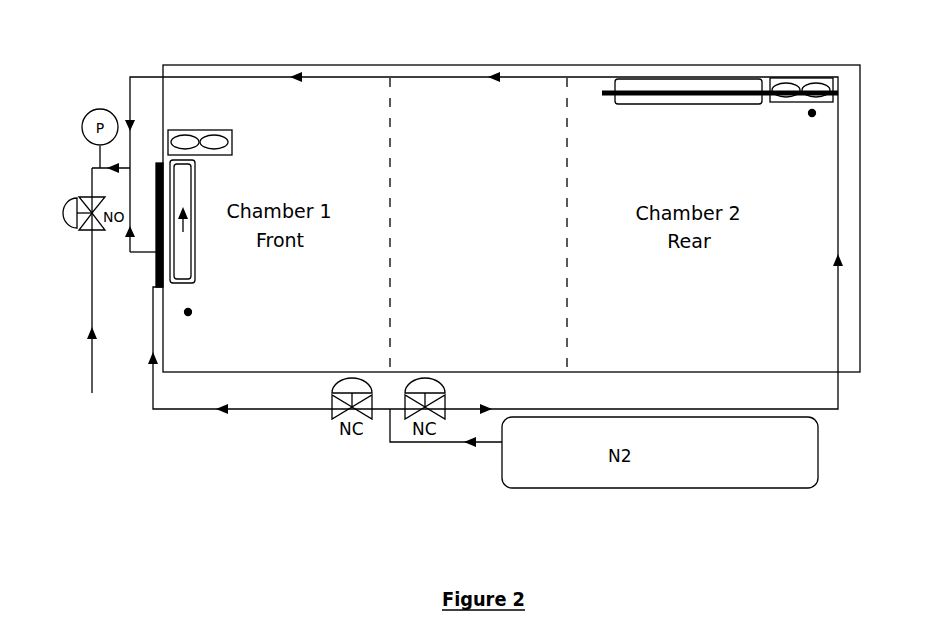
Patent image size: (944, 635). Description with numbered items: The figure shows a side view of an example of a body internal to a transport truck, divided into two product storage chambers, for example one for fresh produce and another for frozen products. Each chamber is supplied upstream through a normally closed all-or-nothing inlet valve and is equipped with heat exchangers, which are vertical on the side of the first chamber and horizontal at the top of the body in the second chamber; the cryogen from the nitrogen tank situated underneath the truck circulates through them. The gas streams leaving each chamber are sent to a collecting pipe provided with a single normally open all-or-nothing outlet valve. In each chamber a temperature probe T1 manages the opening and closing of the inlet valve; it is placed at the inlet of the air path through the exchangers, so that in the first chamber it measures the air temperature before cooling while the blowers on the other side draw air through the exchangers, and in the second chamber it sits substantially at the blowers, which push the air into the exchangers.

The temperature probe T1 is at (498, 228).